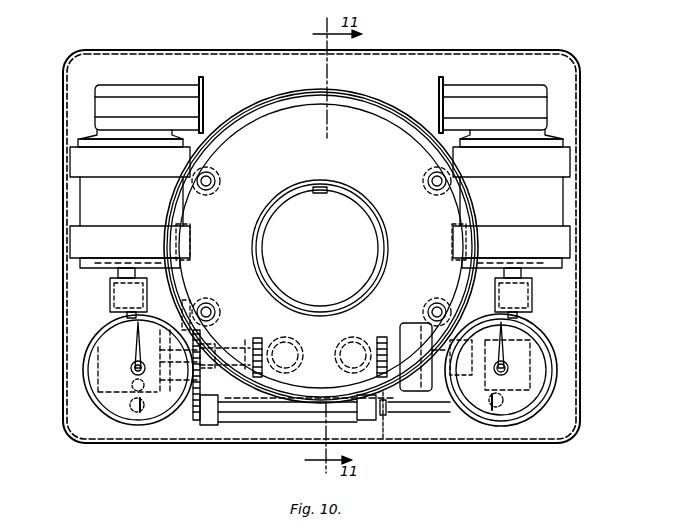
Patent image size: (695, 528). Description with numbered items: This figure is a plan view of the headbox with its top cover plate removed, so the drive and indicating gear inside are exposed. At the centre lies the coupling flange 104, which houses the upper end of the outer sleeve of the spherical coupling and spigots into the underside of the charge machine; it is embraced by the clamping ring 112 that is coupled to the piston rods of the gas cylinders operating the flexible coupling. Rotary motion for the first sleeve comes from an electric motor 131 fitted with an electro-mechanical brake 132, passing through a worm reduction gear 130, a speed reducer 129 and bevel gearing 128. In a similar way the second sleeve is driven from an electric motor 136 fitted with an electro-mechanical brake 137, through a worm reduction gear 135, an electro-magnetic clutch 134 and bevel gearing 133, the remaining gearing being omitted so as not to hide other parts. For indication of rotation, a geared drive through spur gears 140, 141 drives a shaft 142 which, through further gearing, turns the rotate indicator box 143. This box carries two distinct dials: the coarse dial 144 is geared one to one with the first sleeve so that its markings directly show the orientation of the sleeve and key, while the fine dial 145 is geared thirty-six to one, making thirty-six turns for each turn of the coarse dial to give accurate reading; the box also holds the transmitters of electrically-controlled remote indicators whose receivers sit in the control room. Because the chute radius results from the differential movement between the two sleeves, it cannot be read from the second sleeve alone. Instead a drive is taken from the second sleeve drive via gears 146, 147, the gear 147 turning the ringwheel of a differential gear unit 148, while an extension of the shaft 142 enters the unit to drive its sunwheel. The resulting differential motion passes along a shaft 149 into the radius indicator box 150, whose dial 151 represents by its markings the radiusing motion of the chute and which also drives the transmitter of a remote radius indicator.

The coupling flange 104 is at (245, 138).
The clamping ring 112 is at (307, 87).
The bevel gearing 128 is at (373, 347).
The speed reducer 129 is at (418, 387).
The worm reduction gear 130 is at (530, 353).
The electric motor 131 is at (511, 228).
The electro-mechanical brake 132 is at (480, 108).
The bevel gearing 133 is at (278, 407).
The electro-magnetic clutch 134 is at (187, 303).
The worm reduction gear 135 is at (100, 330).
The electric motor 136 is at (130, 203).
The electro-mechanical brake 137 is at (130, 110).
The spur gear 140 is at (388, 335).
The spur gear 141 is at (378, 440).
The shaft 142 is at (450, 408).
The rotate indicator box 143 is at (538, 413).
The coarse dial 144 is at (545, 377).
The fine dial 145 is at (540, 392).
The gear 146 is at (198, 355).
The gear 147 is at (192, 420).
The differential gear unit 148 is at (213, 425).
The shaft 149 is at (138, 430).
The radius indicator box 150 is at (83, 365).
The dial 151 is at (112, 388).